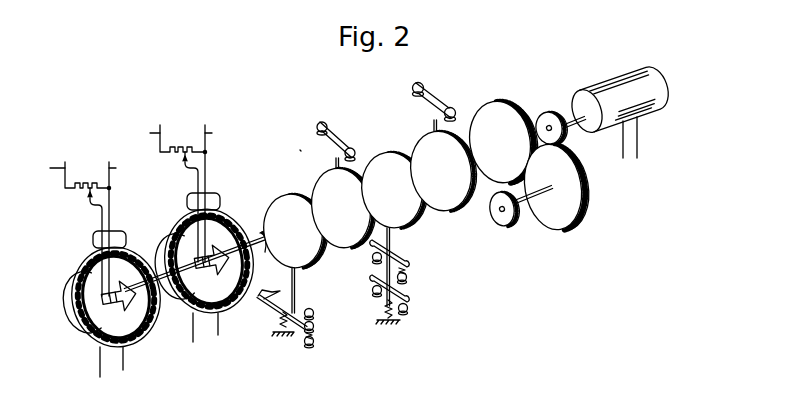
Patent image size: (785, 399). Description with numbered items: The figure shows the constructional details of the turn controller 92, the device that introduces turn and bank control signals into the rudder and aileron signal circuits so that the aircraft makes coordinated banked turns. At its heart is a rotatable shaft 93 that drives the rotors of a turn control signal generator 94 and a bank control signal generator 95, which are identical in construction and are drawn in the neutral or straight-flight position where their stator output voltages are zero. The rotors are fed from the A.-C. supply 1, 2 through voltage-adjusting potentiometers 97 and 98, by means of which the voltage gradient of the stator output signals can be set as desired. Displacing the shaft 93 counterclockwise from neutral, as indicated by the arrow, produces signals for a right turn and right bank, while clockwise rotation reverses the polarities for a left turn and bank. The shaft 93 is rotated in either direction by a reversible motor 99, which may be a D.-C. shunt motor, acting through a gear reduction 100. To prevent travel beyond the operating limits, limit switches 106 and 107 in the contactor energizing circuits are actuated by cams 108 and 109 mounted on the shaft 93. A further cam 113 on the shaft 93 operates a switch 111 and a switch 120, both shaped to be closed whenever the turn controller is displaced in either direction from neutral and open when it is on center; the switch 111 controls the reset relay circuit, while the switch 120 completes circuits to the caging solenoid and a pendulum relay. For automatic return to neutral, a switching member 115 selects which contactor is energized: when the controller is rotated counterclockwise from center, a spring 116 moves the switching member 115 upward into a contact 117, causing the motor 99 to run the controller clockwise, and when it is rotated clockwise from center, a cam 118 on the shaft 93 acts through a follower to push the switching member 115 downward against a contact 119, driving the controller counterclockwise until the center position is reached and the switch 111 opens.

The A.-C. supply lead 1 is at (53, 169).
The A.-C. supply lead 2 is at (117, 168).
The turn controller 92 is at (389, 106).
The rotatable shaft 93 is at (266, 251).
The turn control signal generator 94 is at (80, 250).
The bank control signal generator 95 is at (247, 206).
The voltage-adjusting potentiometer 97 is at (84, 225).
The voltage-adjusting potentiometer 98 is at (180, 158).
The reversible motor 99 is at (607, 84).
The gear reduction 100 is at (549, 105).
The limit switch 106 is at (440, 101).
The limit switch 107 is at (338, 134).
The cam 108 is at (450, 210).
The cam 109 is at (363, 247).
The switch 111 is at (403, 292).
The cam 113 is at (418, 224).
The switching member 115 is at (315, 324).
The spring 116 is at (278, 320).
The contact 117 is at (315, 312).
The cam 118 is at (315, 268).
The contact 119 is at (313, 339).
The switch 120 is at (407, 257).